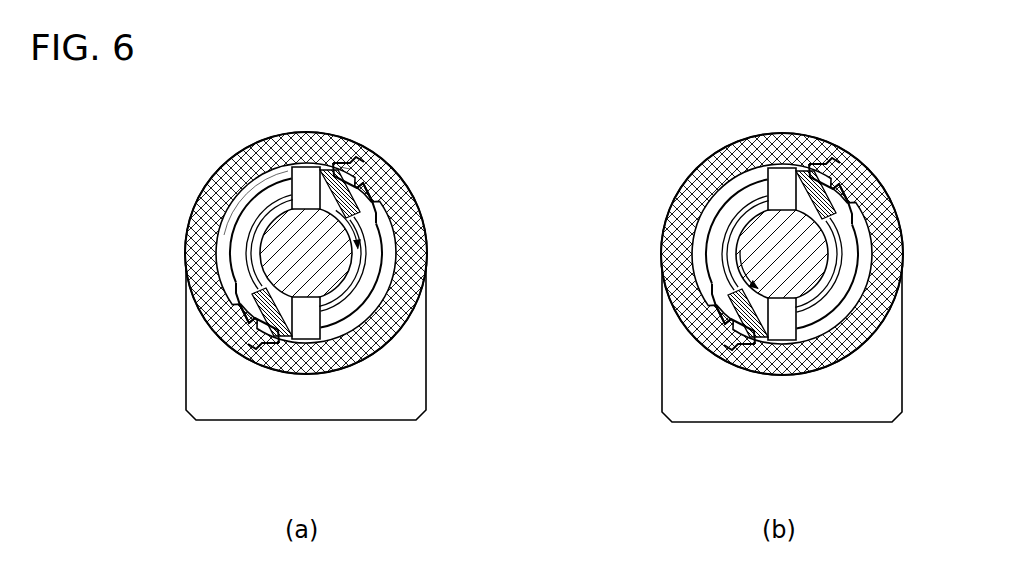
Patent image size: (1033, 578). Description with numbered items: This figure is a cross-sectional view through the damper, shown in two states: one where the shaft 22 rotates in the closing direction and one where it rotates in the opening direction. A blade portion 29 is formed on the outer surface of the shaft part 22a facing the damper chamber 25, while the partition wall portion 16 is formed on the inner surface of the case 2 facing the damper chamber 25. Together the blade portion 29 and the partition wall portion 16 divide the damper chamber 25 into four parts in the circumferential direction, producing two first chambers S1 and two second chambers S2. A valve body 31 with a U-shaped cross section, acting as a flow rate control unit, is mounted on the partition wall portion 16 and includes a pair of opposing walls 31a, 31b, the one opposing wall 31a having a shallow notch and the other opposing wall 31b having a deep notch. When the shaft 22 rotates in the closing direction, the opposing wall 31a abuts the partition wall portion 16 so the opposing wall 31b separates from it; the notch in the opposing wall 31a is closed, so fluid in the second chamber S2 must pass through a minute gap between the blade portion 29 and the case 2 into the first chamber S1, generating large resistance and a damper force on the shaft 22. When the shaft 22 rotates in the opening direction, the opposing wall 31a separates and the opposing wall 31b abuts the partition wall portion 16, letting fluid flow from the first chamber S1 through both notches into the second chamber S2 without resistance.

The case 2 is at (323, 134).
The partition wall portion 16 is at (385, 172).
The shaft 22 is at (255, 211).
The shaft part 22a is at (246, 247).
The damper chamber 25 is at (216, 205).
The blade portion 29 is at (295, 178).
The valve body 31 is at (380, 190).
The opposing wall 31a is at (352, 155).
The opposing wall 31b is at (378, 205).
The first chamber S1 is at (284, 183).
The second chamber S2 is at (338, 168).